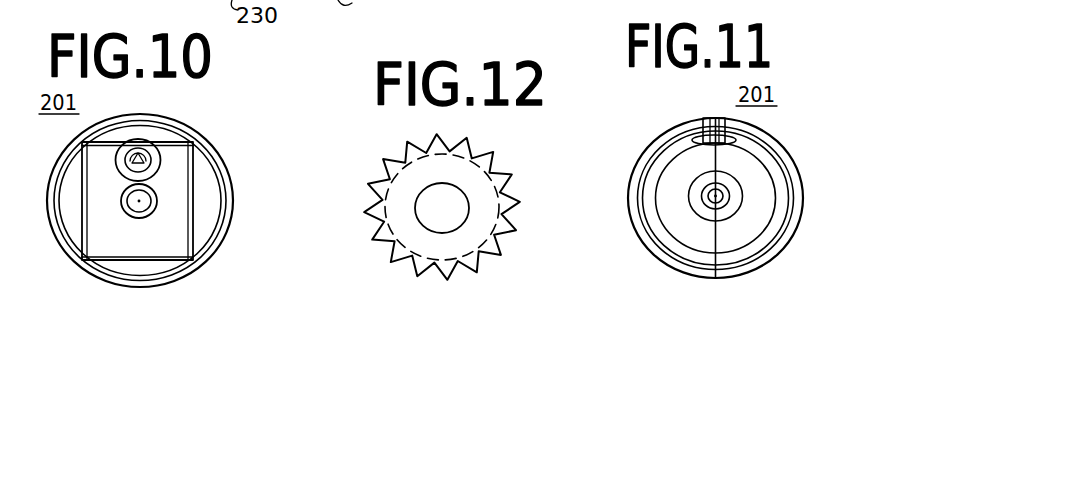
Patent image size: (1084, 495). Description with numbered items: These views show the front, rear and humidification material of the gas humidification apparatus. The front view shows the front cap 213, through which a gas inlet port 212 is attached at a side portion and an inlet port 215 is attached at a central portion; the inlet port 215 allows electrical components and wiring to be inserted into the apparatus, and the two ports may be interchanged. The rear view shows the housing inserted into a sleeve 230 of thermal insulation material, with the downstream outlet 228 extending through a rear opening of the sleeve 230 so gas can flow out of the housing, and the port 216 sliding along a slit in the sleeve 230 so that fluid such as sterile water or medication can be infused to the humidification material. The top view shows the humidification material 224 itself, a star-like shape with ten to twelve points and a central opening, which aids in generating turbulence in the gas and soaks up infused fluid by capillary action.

In FIG. 10, the gas inlet port 212 is at (146, 158).
In FIG. 10, the front cap 213 is at (207, 203).
In FIG. 10, the inlet port 215 is at (155, 197).
In FIG. 11, the port 216 is at (725, 127).
In FIG. 12, the humidification material 224 is at (512, 228).
In FIG. 11, the outlet 228 is at (732, 188).
In FIG. 11, the sleeve 230 is at (753, 230).